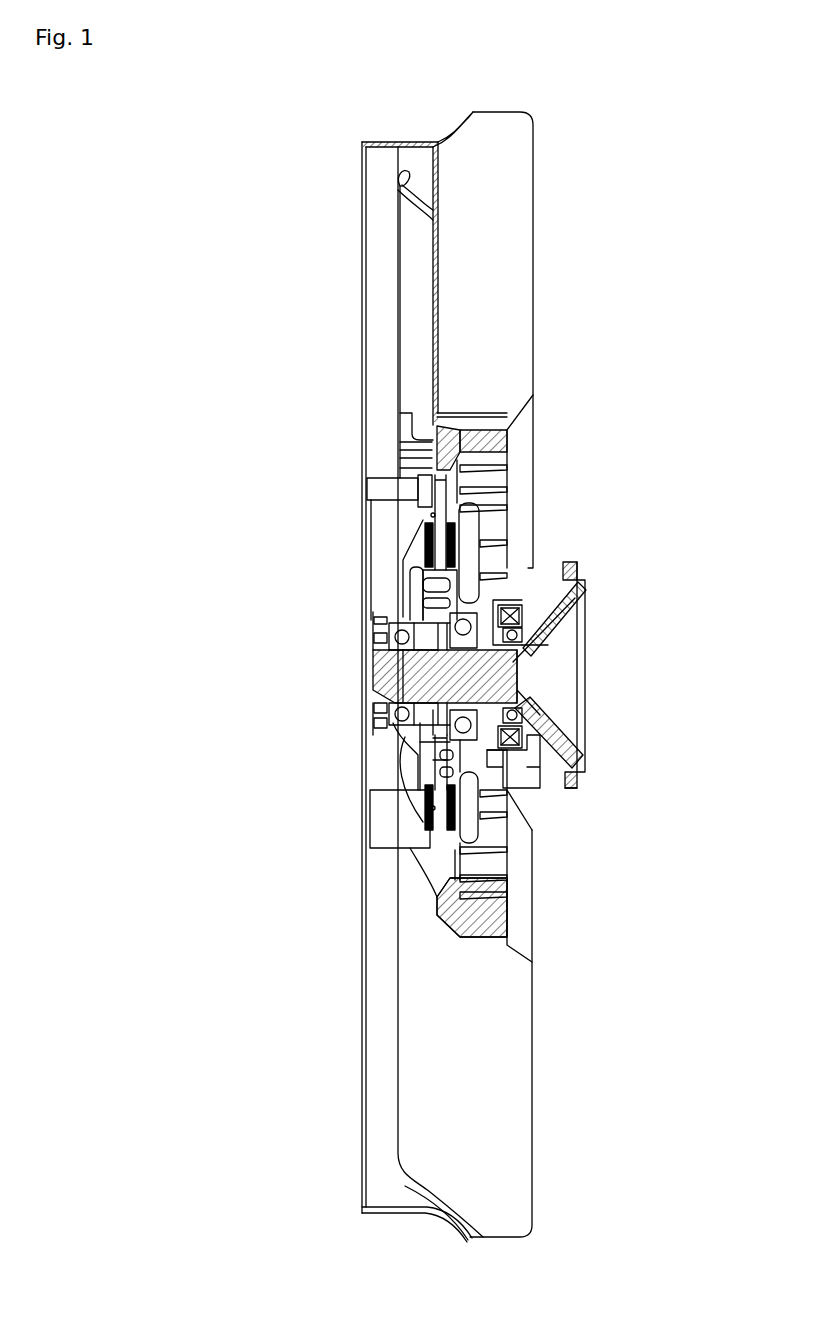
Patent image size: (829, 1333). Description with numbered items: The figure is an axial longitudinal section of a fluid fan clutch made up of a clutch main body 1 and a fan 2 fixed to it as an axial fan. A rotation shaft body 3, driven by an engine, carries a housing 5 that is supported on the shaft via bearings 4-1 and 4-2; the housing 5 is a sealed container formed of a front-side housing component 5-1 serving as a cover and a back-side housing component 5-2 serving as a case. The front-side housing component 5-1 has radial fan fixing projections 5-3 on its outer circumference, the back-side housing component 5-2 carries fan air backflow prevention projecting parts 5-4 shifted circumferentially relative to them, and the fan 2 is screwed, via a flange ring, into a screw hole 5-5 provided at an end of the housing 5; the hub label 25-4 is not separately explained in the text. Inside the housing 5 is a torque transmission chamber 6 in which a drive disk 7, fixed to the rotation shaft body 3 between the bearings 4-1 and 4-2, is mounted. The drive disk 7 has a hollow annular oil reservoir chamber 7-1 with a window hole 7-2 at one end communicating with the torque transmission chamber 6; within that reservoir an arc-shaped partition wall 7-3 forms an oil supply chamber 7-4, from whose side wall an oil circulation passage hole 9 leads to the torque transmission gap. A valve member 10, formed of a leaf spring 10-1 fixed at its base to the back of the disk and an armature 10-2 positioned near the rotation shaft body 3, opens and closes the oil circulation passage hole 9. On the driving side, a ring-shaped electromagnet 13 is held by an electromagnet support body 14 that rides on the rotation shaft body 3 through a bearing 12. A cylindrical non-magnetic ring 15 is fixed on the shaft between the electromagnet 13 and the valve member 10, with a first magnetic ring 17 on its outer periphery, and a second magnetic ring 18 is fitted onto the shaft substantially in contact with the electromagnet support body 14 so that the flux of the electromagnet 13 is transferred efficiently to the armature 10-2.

The clutch main body 1 is at (352, 531).
The fan 2 is at (517, 221).
The rotation shaft body 3 is at (512, 678).
The bearing 4-1 is at (360, 708).
The bearing 4-2 is at (528, 605).
The housing 5 is at (356, 820).
The front-side housing component 5-1 is at (390, 832).
The back-side housing component 5-2 is at (480, 833).
The fan fixing projections 5-3 is at (432, 472).
The fan air backflow prevention projecting parts 5-4 is at (392, 877).
The rotor hub 25-4 is at (472, 907).
The screw hole 5-5 is at (418, 497).
The torque transmission chamber 6 is at (460, 583).
The drive disk 7 is at (433, 527).
The annular oil reservoir chamber 7-1 is at (462, 612).
The window hole 7-2 is at (397, 735).
The partition wall 7-3 is at (470, 602).
The oil supply chamber 7-4 is at (403, 786).
The oil circulation passage hole 9 is at (400, 800).
The valve member 10 is at (421, 756).
The leaf spring 10-1 is at (365, 740).
The armature 10-2 is at (373, 668).
The bearing 12 is at (584, 760).
The electromagnet 13 is at (540, 737).
The electromagnet support body 14 is at (521, 605).
The non-magnetic ring 15 is at (527, 697).
The first magnetic ring 17 is at (519, 664).
The second magnetic ring 18 is at (520, 652).